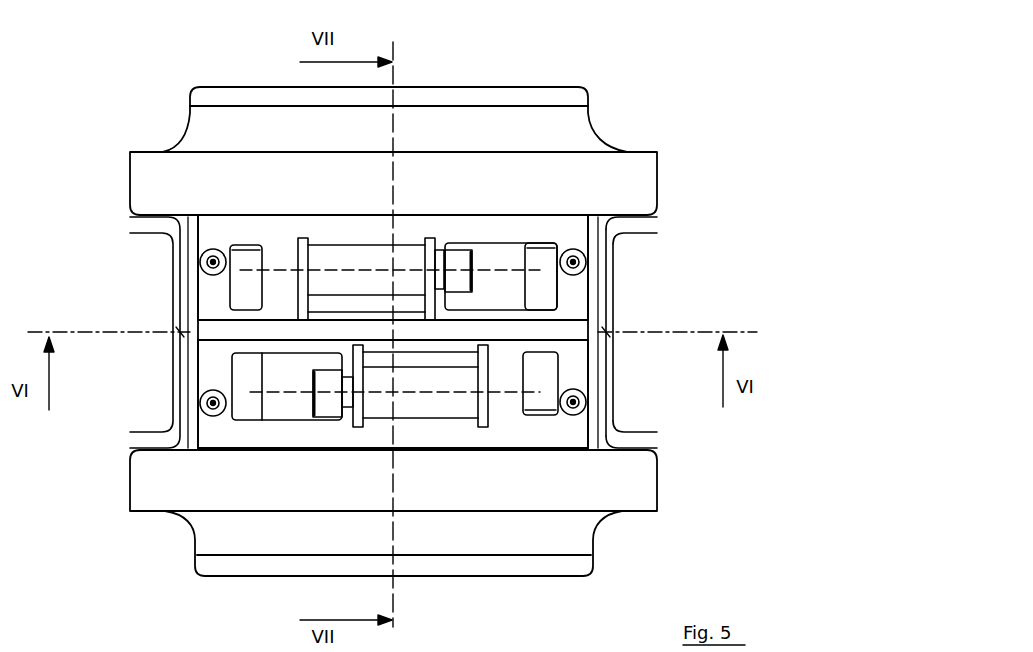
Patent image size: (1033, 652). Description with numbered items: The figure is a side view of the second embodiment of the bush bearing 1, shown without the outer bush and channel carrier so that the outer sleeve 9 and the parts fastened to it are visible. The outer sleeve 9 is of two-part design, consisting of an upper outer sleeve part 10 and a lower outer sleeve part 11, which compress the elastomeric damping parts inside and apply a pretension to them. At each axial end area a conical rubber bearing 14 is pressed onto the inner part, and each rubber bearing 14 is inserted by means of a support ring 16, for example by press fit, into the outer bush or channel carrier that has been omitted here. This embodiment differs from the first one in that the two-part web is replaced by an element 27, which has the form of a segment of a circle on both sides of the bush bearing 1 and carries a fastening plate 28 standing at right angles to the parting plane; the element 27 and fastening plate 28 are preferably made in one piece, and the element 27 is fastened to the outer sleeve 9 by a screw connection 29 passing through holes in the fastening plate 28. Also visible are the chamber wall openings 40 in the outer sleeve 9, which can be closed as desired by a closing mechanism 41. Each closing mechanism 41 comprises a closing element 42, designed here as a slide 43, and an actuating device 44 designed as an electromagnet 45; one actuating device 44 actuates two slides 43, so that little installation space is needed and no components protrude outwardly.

The bush bearing 1 is at (636, 55).
The outer sleeve 9 is at (645, 315).
The upper outer sleeve part 10 is at (600, 272).
The lower outer sleeve part 11 is at (603, 405).
The conical rubber bearing 14 is at (634, 120).
The support ring 16 is at (623, 183).
The element 27 is at (220, 332).
The fastening plate 28 is at (213, 357).
The screw connection 29 is at (213, 262).
The chamber wall opening 40 is at (242, 373).
The closing mechanism 41 is at (400, 152).
The closing element 42 is at (474, 213).
The slide 43 is at (288, 400).
The actuating device 44 is at (423, 450).
The electromagnet 45 is at (437, 405).